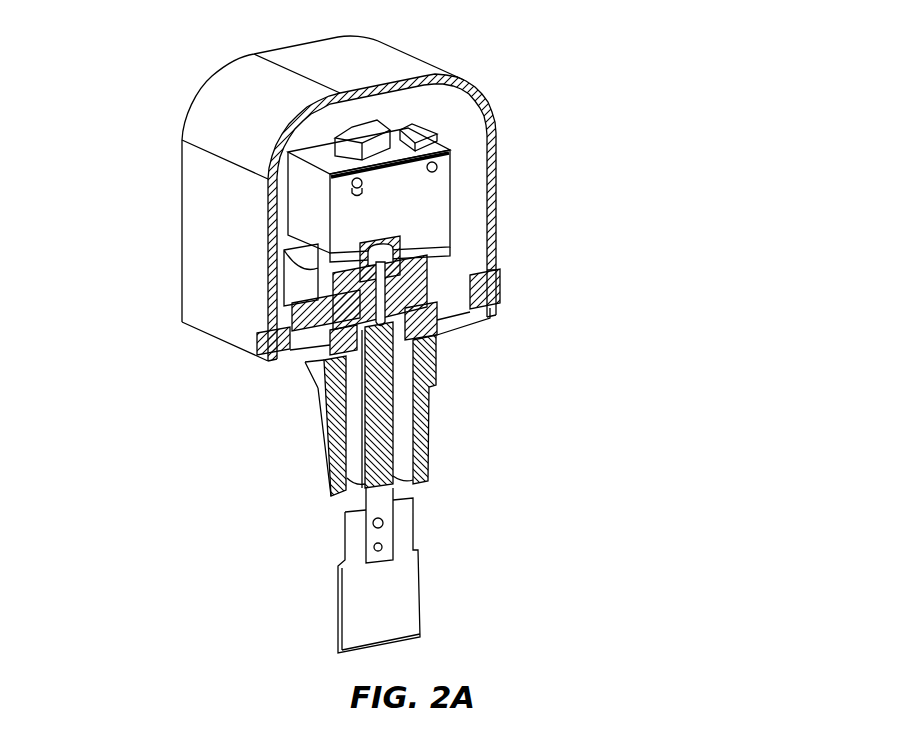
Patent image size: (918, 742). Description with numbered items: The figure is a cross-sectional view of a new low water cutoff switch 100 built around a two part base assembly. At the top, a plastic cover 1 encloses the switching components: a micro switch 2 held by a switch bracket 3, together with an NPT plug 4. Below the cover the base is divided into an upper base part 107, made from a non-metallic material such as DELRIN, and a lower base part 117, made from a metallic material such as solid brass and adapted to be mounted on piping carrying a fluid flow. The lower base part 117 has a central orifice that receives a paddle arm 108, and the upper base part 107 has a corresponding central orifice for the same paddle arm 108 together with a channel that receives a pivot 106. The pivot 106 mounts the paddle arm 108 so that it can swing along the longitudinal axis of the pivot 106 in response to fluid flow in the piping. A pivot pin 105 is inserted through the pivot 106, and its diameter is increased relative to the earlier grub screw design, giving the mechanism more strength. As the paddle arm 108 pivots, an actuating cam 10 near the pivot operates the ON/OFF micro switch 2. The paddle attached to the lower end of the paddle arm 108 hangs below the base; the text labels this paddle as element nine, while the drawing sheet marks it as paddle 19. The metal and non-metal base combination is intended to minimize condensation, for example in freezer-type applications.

The low water cutoff switch 100 is at (139, 59).
The plastic cover 1 is at (417, 63).
The micro switch 2 is at (437, 144).
The switch bracket 3 is at (437, 191).
The NPT plug 4 is at (432, 270).
The pivot 106 is at (397, 308).
The pivot pin 105 is at (400, 300).
The upper base part 107 is at (432, 342).
The actuating cam 10 is at (307, 283).
The paddle arm 108 is at (377, 447).
The lower base part 117 is at (430, 418).
The paddle 19 is at (402, 582).